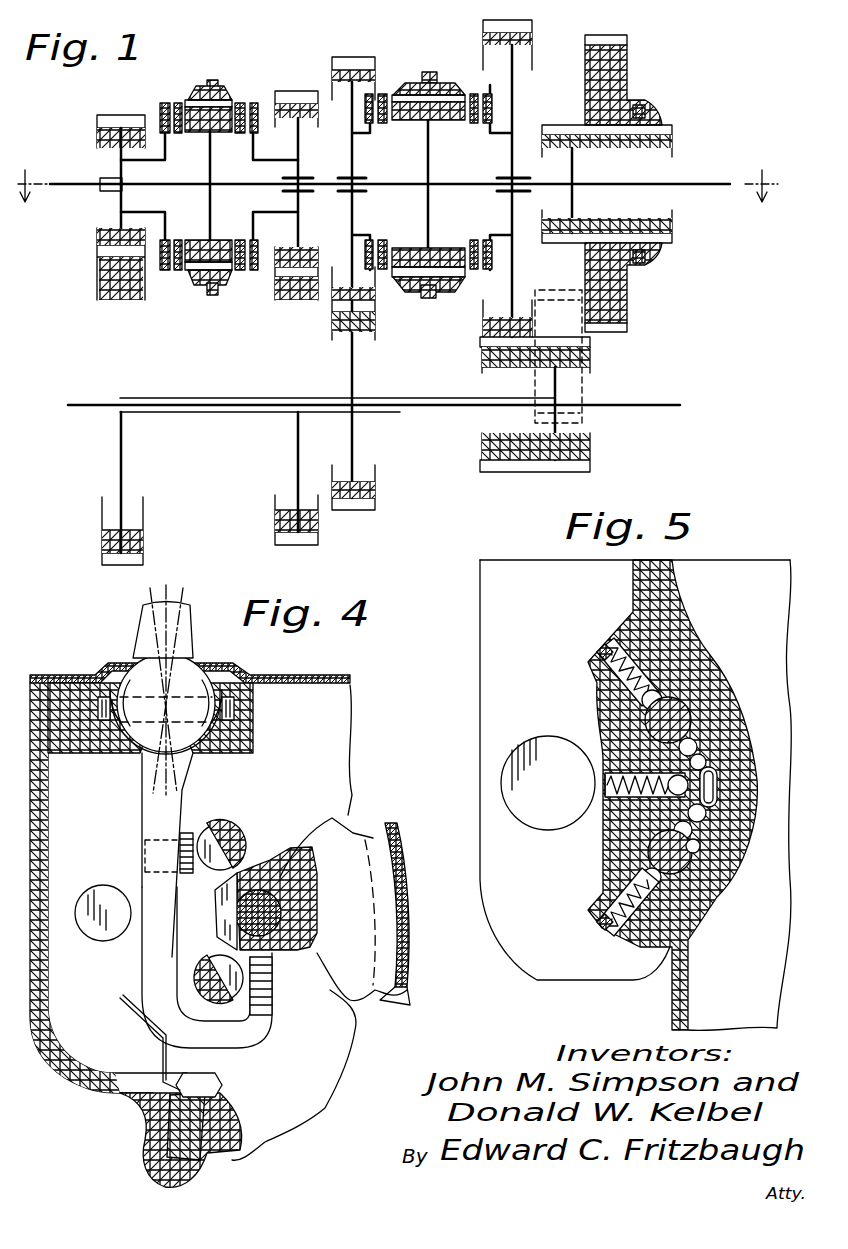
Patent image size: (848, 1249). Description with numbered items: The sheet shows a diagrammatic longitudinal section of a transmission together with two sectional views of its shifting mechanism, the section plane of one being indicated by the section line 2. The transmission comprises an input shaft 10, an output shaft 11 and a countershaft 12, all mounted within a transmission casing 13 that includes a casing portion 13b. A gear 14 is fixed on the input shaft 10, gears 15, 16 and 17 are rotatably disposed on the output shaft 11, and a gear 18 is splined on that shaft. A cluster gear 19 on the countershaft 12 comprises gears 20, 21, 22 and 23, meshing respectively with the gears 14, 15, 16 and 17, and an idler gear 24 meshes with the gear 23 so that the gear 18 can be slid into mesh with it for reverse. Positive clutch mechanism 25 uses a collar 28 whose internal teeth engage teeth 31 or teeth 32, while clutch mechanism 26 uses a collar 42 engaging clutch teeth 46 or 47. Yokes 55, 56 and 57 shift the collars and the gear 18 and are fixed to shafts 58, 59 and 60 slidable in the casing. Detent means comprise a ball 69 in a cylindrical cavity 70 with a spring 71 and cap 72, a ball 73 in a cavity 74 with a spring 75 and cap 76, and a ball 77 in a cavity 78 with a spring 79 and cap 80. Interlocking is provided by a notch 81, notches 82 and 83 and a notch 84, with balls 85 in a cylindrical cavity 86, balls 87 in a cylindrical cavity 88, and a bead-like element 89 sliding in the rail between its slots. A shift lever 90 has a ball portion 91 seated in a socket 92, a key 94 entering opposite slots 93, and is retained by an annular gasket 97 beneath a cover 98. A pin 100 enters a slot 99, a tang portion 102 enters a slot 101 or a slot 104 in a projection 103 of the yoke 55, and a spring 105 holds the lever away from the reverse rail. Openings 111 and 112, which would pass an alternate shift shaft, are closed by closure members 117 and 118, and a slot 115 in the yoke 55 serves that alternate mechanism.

In FIG. 1, the section line 2 is at (395, 186).
In FIG. 1, the input shaft 10 is at (82, 184).
In FIG. 1, the output shaft 11 is at (702, 184).
In FIG. 1, the countershaft 12 is at (658, 405).
In FIG. 4, the transmission casing 13 is at (40, 960).
In FIG. 5, the transmission casing 13 is at (753, 572).
In FIG. 5, the casing portion 13b is at (722, 900).
In FIG. 1, the gear 14 is at (121, 115).
In FIG. 1, the gear 15 is at (290, 91).
In FIG. 1, the gear 16 is at (352, 57).
In FIG. 1, the gear 17 is at (528, 27).
In FIG. 1, the gear 18 is at (628, 38).
In FIG. 1, the cluster gear 19 is at (406, 412).
In FIG. 1, the gear 20 is at (143, 547).
In FIG. 1, the gear 21 is at (318, 527).
In FIG. 1, the gear 22 is at (377, 495).
In FIG. 1, the gear 23 is at (510, 467).
In FIG. 1, the idler gear 24 is at (598, 343).
In FIG. 1, the positive clutch mechanism 25 is at (230, 82).
In FIG. 1, the positive clutch mechanism 26 is at (443, 76).
In FIG. 1, the collar 28 is at (204, 90).
In FIG. 4, the collar 28 is at (385, 833).
In FIG. 1, the teeth 31 is at (165, 103).
In FIG. 1, the teeth 32 is at (255, 103).
In FIG. 1, the collar 42 is at (402, 84).
In FIG. 1, the clutch teeth 46 is at (376, 94).
In FIG. 1, the clutch teeth 47 is at (487, 94).
In FIG. 1, the yoke 55 is at (212, 292).
In FIG. 4, the yoke 55 is at (333, 837).
In FIG. 1, the yoke 56 is at (432, 299).
In FIG. 1, the yoke 57 is at (638, 263).
In FIG. 4, the shaft 58 is at (243, 868).
In FIG. 5, the shaft 58 is at (717, 790).
In FIG. 4, the shaft 59 is at (230, 837).
In FIG. 5, the shaft 59 is at (684, 704).
In FIG. 4, the shaft 60 is at (205, 967).
In FIG. 5, the shaft 60 is at (652, 850).
In FIG. 5, the ball 69 is at (630, 812).
In FIG. 5, the cylindrical cavity 70 is at (607, 796).
In FIG. 5, the spring 71 is at (606, 788).
In FIG. 5, the cap 72 is at (605, 778).
In FIG. 5, the ball 73 is at (662, 697).
In FIG. 5, the cavity 74 is at (627, 637).
In FIG. 5, the spring 75 is at (613, 647).
In FIG. 5, the cap 76 is at (602, 655).
In FIG. 5, the ball 77 is at (643, 877).
In FIG. 5, the cylindrical cavity 78 is at (600, 918).
In FIG. 5, the spring 79 is at (613, 927).
In FIG. 5, the cap 80 is at (622, 935).
In FIG. 5, the notch 81 is at (690, 738).
In FIG. 5, the notch 82 is at (715, 775).
In FIG. 5, the notch 83 is at (705, 813).
In FIG. 5, the notch 84 is at (692, 870).
In FIG. 5, the balls 85 is at (697, 755).
In FIG. 5, the cylindrical cavity 86 is at (704, 766).
In FIG. 5, the balls 87 is at (692, 830).
In FIG. 5, the cylindrical cavity 88 is at (700, 847).
In FIG. 5, the bead-like element 89 is at (712, 800).
In FIG. 4, the shift lever 90 is at (142, 627).
In FIG. 4, the ball portion 91 is at (140, 670).
In FIG. 4, the socket 92 is at (120, 732).
In FIG. 4, the slots 93 is at (84, 690).
In FIG. 4, the key 94 is at (252, 727).
In FIG. 4, the annular gasket 97 is at (250, 693).
In FIG. 4, the cover 98 is at (312, 677).
In FIG. 4, the slot 99 is at (206, 838).
In FIG. 4, the pin 100 is at (180, 848).
In FIG. 4, the slot 101 is at (233, 1021).
In FIG. 4, the tang portion 102 is at (277, 1007).
In FIG. 4, the projection 103 is at (305, 950).
In FIG. 4, the slot 104 is at (272, 975).
In FIG. 4, the spring 105 is at (128, 1010).
In FIG. 4, the opening 111 is at (118, 887).
In FIG. 5, the opening 112 is at (533, 740).
In FIG. 4, the slot 115 is at (225, 893).
In FIG. 4, the closure member 117 is at (97, 936).
In FIG. 5, the closure member 118 is at (528, 820).